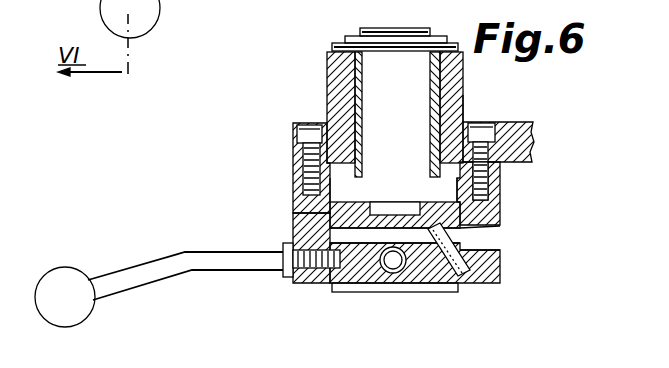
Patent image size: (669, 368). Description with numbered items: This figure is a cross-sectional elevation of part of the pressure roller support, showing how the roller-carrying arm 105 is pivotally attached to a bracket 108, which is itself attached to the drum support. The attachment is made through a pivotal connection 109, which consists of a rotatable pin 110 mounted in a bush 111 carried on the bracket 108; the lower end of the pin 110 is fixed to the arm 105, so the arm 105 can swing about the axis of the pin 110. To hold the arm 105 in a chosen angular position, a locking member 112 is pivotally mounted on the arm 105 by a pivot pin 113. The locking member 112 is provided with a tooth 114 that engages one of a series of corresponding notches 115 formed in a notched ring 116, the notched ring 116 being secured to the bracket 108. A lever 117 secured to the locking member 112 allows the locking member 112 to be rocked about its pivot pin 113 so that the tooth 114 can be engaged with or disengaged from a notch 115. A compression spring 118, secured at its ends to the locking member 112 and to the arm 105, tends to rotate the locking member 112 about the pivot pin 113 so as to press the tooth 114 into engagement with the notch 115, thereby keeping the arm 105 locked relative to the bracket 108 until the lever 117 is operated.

The arm 105 is at (462, 235).
The bracket 108 is at (533, 130).
The pivotal connection 109 is at (324, 97).
The rotatable pin 110 is at (378, 82).
The bush 111 is at (463, 107).
The locking member 112 is at (490, 284).
The pivot pin 113 is at (402, 268).
The tooth 114 is at (300, 224).
The notches 115 is at (293, 205).
The notched ring 116 is at (500, 202).
The lever 117 is at (240, 266).
The compression spring 118 is at (470, 248).